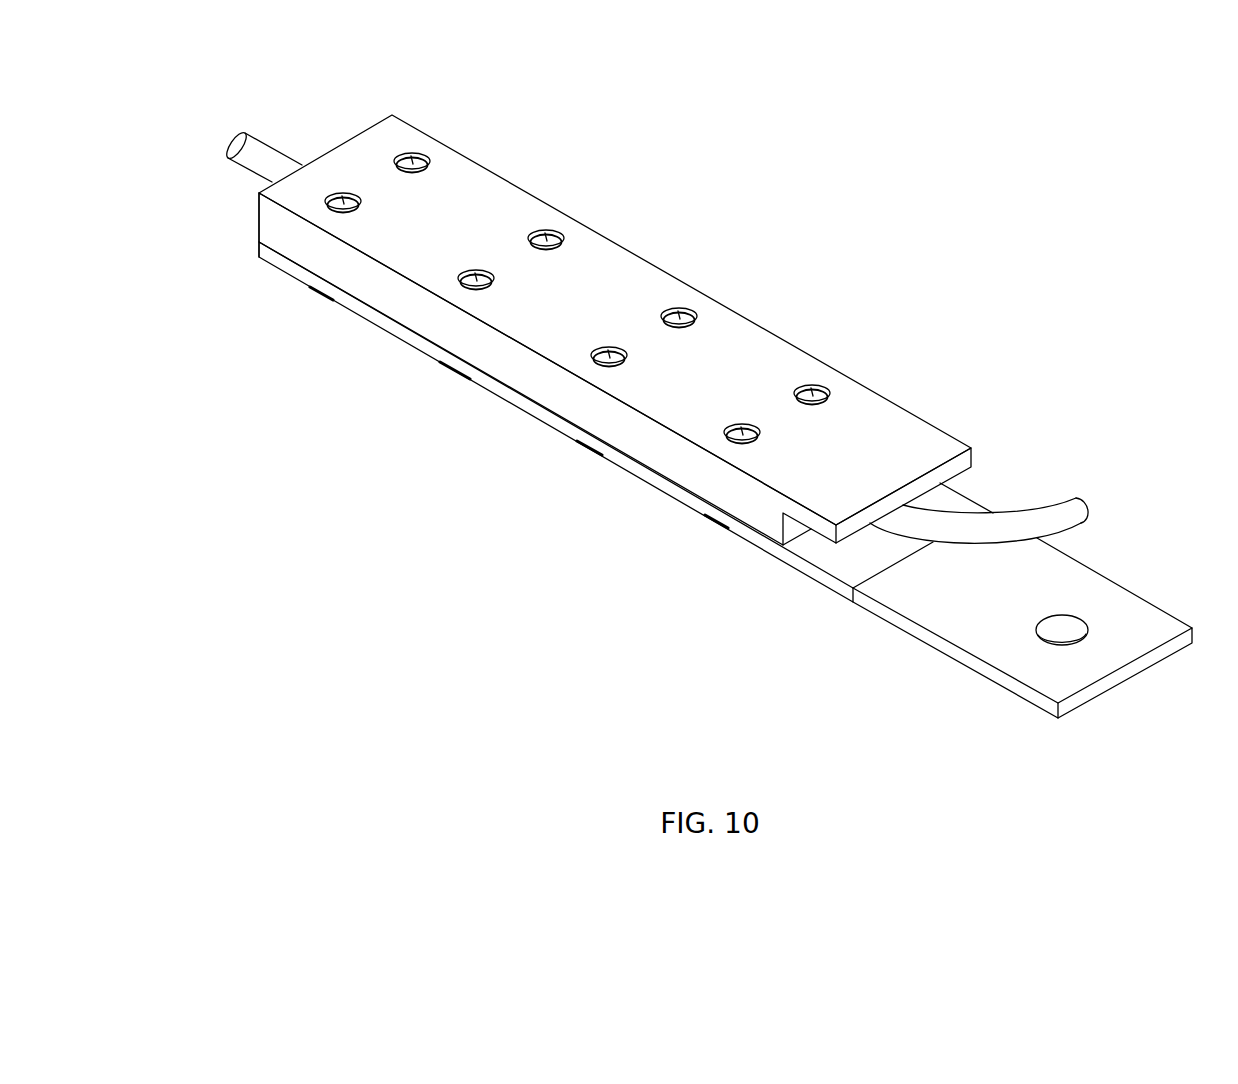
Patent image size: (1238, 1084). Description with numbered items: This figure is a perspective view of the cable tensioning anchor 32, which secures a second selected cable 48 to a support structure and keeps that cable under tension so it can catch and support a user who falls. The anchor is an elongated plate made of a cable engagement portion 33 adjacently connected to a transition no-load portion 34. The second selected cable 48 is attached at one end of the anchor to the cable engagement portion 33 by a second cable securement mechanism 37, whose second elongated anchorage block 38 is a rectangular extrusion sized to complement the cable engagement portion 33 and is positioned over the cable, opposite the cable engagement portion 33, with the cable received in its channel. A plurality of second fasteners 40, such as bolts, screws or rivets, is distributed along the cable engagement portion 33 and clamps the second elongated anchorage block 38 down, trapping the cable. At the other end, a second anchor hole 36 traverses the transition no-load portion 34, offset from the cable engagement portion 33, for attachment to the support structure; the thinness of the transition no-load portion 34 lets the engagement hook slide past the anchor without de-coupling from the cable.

The cable tensioning anchor 32 is at (1068, 105).
The cable engagement portion 33 is at (535, 412).
The transition no-load portion 34 is at (1082, 582).
The second anchor hole 36 is at (1078, 628).
The second cable securement mechanism 37 is at (242, 232).
The second elongated anchorage block 38 is at (487, 172).
The plurality of second fasteners 40 is at (332, 198).
The second selected cable 48 is at (1065, 507).